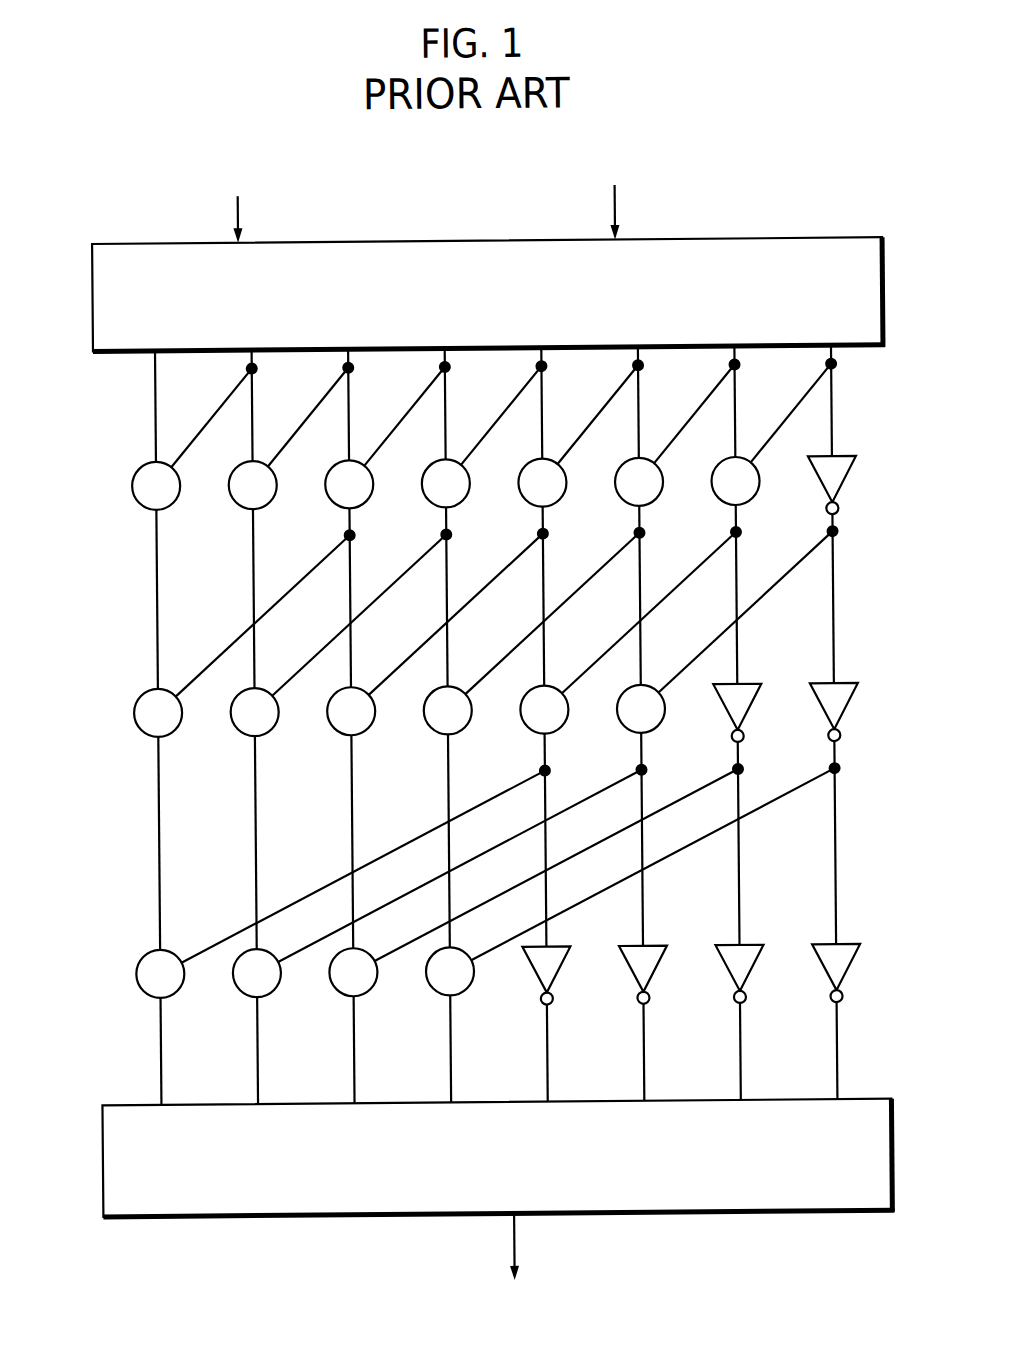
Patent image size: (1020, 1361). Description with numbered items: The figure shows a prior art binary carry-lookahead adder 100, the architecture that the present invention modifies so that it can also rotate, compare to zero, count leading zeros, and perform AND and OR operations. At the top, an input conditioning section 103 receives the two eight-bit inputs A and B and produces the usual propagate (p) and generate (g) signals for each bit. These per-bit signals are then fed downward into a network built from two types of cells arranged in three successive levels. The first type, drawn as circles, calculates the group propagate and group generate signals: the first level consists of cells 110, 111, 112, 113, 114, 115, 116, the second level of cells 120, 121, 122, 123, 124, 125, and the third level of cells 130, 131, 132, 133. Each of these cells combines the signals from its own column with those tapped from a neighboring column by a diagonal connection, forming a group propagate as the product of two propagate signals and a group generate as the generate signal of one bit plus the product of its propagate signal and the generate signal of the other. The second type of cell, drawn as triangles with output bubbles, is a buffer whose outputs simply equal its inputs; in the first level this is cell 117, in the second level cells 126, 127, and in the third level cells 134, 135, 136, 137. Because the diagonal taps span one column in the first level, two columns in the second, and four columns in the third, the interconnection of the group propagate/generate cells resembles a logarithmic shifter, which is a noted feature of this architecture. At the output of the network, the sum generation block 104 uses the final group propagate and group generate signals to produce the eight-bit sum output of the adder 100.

The binary carry-lookahead adder 100 is at (78, 218).
The input conditioning section 103 is at (813, 239).
The sum generation block 104 is at (863, 1100).
The group propagate/generate cell 110 is at (141, 501).
The group propagate/generate cell 111 is at (238, 501).
The group propagate/generate cell 112 is at (334, 501).
The group propagate/generate cell 113 is at (431, 501).
The group propagate/generate cell 114 is at (527, 501).
The group propagate/generate cell 115 is at (624, 501).
The group propagate/generate cell 116 is at (720, 501).
The buffer cell 117 is at (836, 458).
The group propagate/generate cell 120 is at (141, 728).
The group propagate/generate cell 121 is at (238, 728).
The group propagate/generate cell 122 is at (334, 728).
The group propagate/generate cell 123 is at (431, 728).
The group propagate/generate cell 124 is at (527, 728).
The group propagate/generate cell 125 is at (624, 728).
The buffer cell 126 is at (742, 684).
The buffer cell 127 is at (839, 684).
The group propagate/generate cell 130 is at (149, 986).
The group propagate/generate cell 131 is at (246, 986).
The group propagate/generate cell 132 is at (342, 986).
The group propagate/generate cell 133 is at (439, 986).
The buffer cell 134 is at (560, 945).
The buffer cell 135 is at (657, 945).
The buffer cell 136 is at (753, 945).
The buffer cell 137 is at (850, 945).